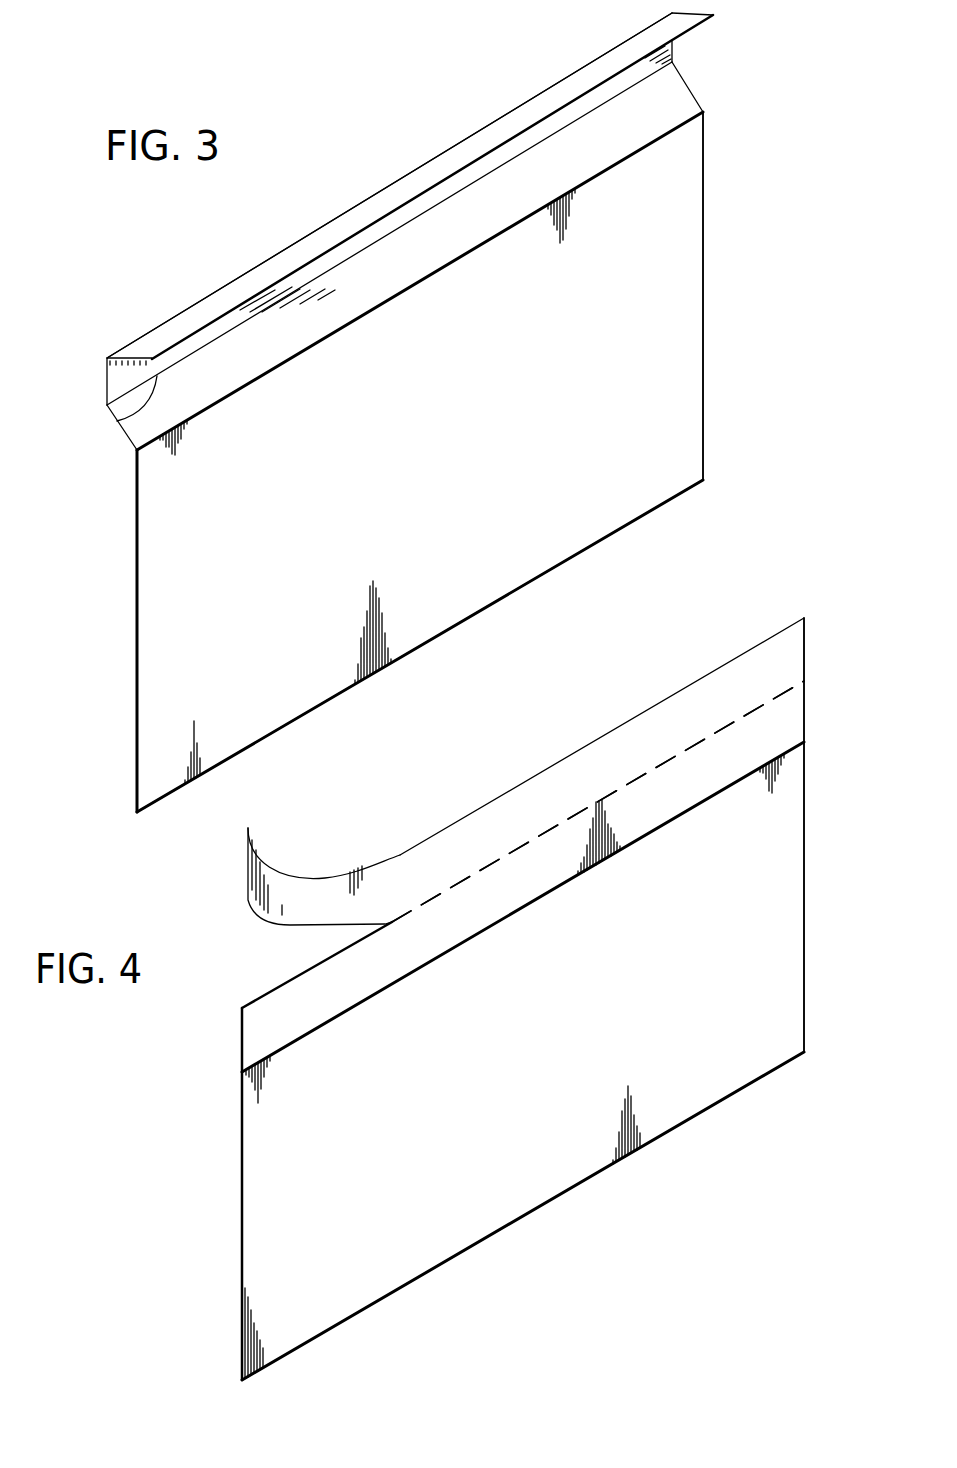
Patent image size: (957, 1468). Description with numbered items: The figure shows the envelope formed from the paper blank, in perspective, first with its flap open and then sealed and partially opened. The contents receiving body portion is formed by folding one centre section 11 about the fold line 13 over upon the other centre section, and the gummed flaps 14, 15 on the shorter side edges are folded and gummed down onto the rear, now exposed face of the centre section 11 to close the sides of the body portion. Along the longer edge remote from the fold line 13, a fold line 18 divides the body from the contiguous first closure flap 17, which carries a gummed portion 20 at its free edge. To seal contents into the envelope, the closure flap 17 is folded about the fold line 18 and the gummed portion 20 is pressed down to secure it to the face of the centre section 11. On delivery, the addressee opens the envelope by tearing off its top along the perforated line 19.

In FIG. 3, the centre section 11 is at (662, 372).
In FIG. 4, the centre section 11 is at (560, 1157).
In FIG. 3, the fold line 13 is at (553, 570).
In FIG. 4, the fold line 13 is at (400, 1290).
In FIG. 3, the gummed flap 14 is at (138, 655).
In FIG. 4, the gummed flap 14 is at (242, 1250).
In FIG. 3, the gummed flap 15 is at (703, 395).
In FIG. 4, the gummed flap 15 is at (805, 985).
In FIG. 3, the first closure flap 17 is at (650, 112).
In FIG. 4, the first closure flap 17 is at (452, 845).
In FIG. 3, the fold line 18 is at (117, 421).
In FIG. 4, the fold line 18 is at (680, 690).
In FIG. 3, the perforated line 19 is at (530, 100).
In FIG. 4, the perforated line 19 is at (775, 697).
In FIG. 3, the gummed portion 20 is at (372, 210).
In FIG. 4, the gummed portion 20 is at (265, 1028).